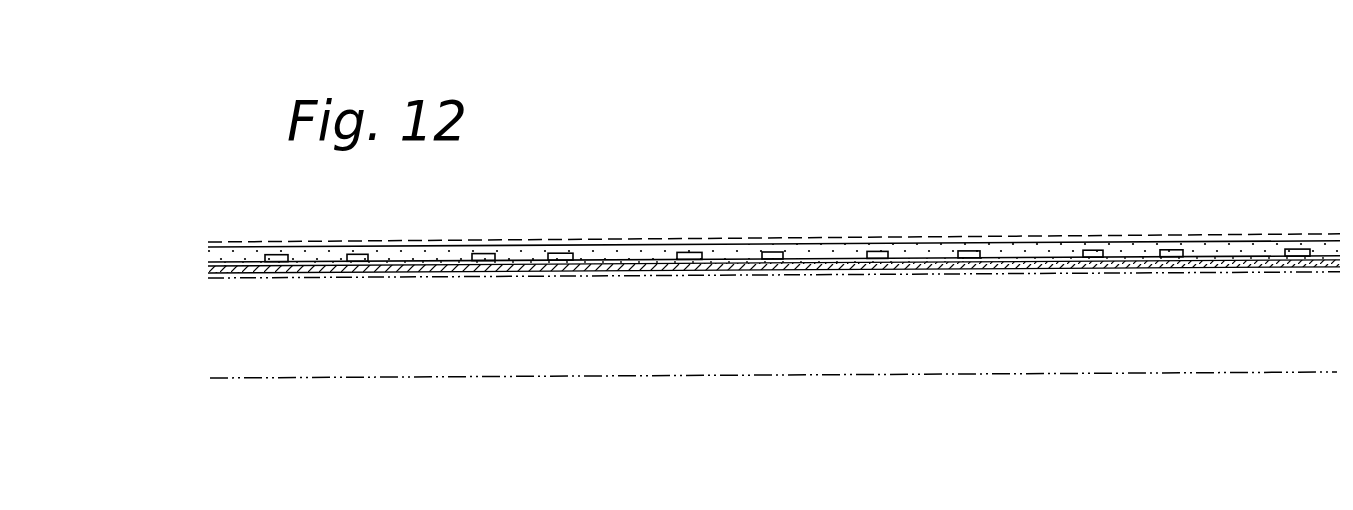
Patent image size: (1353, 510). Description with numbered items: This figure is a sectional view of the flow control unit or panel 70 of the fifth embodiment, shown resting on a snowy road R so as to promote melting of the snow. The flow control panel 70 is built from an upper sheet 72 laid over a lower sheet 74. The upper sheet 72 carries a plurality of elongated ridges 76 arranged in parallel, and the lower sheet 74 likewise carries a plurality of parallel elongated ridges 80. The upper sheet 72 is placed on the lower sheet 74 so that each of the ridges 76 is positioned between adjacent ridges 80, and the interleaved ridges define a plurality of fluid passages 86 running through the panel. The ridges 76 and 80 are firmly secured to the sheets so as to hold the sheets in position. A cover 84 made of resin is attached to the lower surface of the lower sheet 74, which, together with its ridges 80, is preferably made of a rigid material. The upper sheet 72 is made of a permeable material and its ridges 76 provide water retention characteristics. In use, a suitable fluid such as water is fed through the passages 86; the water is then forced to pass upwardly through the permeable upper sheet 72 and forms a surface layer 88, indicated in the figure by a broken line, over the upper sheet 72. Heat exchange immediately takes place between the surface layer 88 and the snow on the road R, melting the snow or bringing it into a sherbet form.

The flow control panel 70 is at (905, 212).
The upper sheet 72 is at (1142, 242).
The lower sheet 74 is at (890, 267).
The ridges 76 is at (817, 244).
The ridges 80 is at (513, 260).
The cover 84 is at (997, 273).
The fluid passages 86 is at (560, 253).
The surface layer 88 is at (1230, 236).
The snowy road R is at (748, 328).